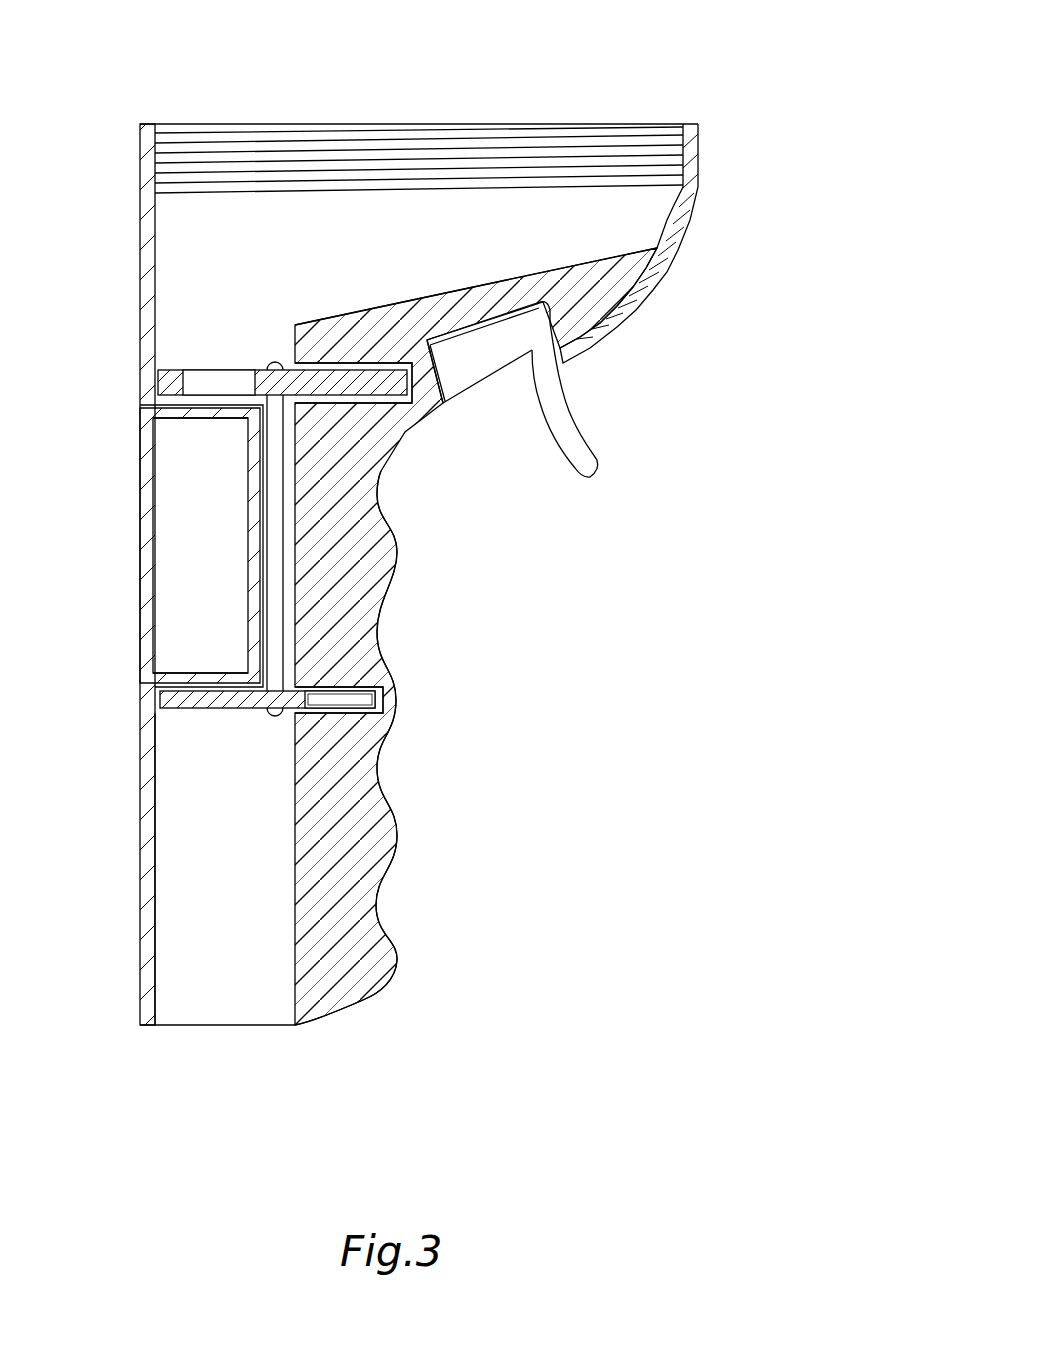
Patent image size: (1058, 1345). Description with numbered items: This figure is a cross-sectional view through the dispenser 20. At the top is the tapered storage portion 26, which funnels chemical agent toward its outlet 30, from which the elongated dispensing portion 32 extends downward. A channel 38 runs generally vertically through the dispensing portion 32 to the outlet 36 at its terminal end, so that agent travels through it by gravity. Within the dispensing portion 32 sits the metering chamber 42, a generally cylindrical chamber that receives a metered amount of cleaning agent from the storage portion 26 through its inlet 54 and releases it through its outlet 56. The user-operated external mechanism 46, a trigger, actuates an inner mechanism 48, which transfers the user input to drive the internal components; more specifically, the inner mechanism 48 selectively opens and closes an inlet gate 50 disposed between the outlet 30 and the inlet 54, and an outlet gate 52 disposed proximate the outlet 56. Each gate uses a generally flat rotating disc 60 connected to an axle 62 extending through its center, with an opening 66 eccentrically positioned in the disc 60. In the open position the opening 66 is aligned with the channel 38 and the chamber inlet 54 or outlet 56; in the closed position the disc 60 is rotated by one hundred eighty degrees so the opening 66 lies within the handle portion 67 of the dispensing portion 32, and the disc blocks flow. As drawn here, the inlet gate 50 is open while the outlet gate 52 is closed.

The dispenser 20 is at (655, 50).
The storage portion 26 is at (722, 208).
The outlet of the storage portion 30 is at (183, 354).
The dispensing portion 32 is at (510, 593).
The outlet of the dispensing portion 36 is at (200, 1055).
The channel 38 is at (182, 838).
The metering chamber 42 is at (140, 538).
The external mechanism 46 is at (567, 423).
The inner mechanism 48 is at (462, 393).
The inlet gate 50 is at (337, 370).
The outlet gate 52 is at (180, 709).
The inlet of the measuring chamber 54 is at (178, 432).
The outlet of the measuring chamber 56 is at (183, 668).
The rotating disc 60 is at (378, 397).
The axle 62 is at (275, 590).
The opening 66 is at (207, 380).
The handle portion 67 is at (392, 823).